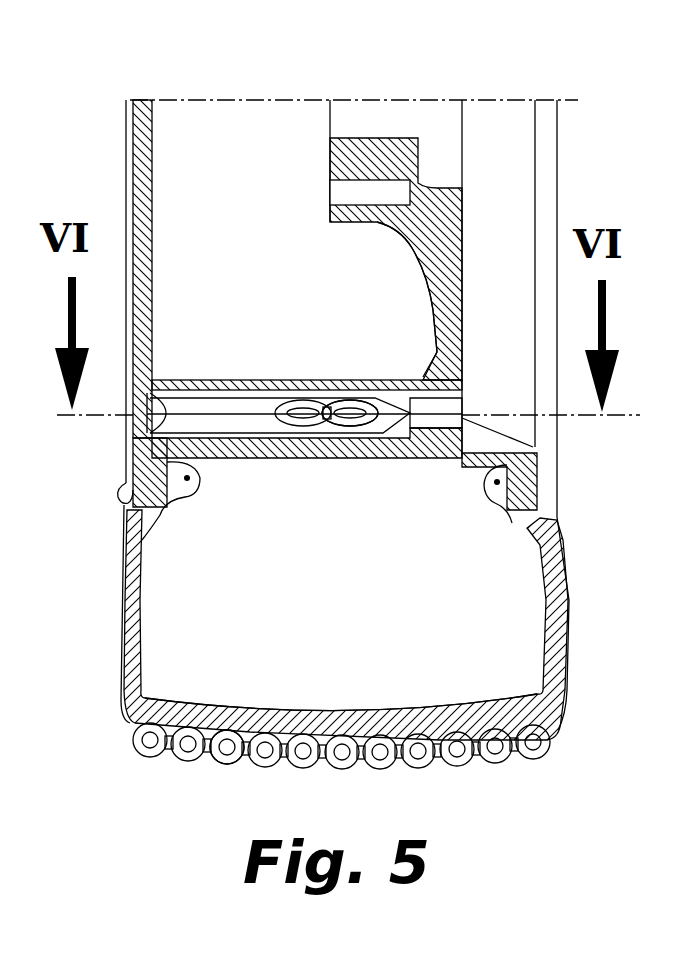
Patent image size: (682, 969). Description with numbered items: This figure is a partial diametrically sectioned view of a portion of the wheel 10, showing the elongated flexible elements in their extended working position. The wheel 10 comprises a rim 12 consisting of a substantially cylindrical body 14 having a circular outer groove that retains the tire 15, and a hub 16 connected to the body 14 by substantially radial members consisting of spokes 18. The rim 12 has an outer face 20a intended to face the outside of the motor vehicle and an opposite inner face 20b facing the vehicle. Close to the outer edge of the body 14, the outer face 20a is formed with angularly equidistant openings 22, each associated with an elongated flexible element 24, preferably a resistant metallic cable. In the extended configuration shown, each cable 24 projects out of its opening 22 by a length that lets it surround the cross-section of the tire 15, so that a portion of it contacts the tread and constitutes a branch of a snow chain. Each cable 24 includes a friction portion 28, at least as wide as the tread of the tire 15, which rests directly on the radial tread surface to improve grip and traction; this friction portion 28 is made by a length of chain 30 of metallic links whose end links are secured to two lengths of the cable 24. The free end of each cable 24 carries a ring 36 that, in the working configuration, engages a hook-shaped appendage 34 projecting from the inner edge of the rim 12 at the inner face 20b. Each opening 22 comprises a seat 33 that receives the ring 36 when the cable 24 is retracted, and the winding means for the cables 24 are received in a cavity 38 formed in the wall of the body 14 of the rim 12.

The motor vehicle wheel 10 is at (580, 633).
The rim 12 is at (128, 130).
The cylindrical body 14 is at (535, 442).
The tire 15 is at (545, 715).
The hub 16 is at (410, 160).
The spokes 18 is at (450, 262).
The outer face 20a is at (505, 182).
The inner face 20b is at (128, 192).
The opening 22 is at (470, 396).
The elongated flexible element 24 is at (565, 553).
The friction portion 28 is at (354, 440).
The length of chain 30 is at (300, 433).
The seat 33 is at (447, 380).
The hook-shaped appendage 34 is at (118, 500).
The ring 36 is at (120, 527).
The cavity 38 is at (130, 437).